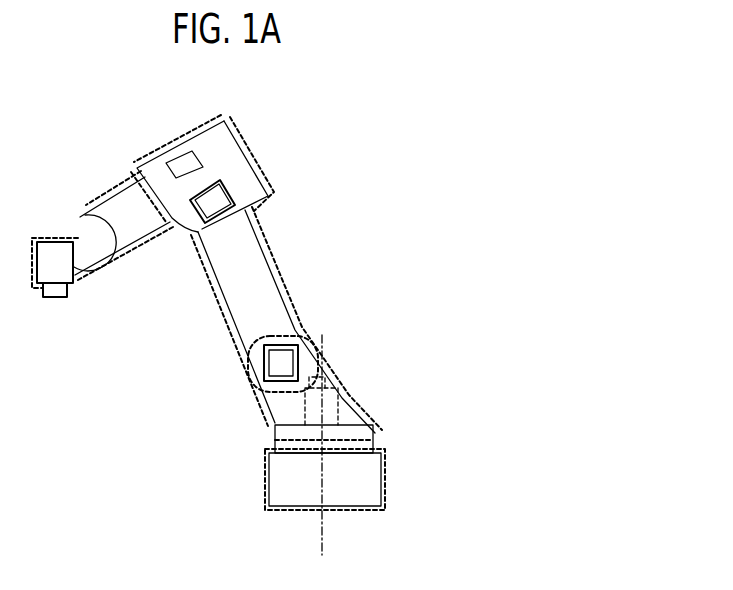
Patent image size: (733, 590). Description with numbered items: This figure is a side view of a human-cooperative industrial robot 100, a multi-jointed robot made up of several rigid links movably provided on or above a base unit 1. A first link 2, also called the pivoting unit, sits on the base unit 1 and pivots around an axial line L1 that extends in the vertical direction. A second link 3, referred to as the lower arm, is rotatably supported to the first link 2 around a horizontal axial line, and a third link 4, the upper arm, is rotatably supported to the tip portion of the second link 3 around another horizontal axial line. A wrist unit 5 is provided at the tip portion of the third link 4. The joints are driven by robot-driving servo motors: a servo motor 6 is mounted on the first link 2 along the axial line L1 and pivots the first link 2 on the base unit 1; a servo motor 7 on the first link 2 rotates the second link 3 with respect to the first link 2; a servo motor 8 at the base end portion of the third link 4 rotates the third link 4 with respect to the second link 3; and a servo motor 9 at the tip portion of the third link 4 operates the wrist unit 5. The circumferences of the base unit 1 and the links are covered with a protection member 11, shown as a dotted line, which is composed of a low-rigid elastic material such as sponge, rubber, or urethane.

The human-cooperative industrial robot 100 is at (346, 200).
The base unit 1 is at (299, 492).
The first link 2 is at (288, 404).
The second link 3 is at (266, 310).
The third link 4 is at (215, 138).
The wrist unit 5 is at (50, 298).
The servo motor 6 is at (347, 412).
The servo motor 7 is at (280, 367).
The servo motor 8 is at (232, 192).
The servo motor 9 is at (183, 162).
The protection member 11 is at (97, 200).
The axial line L1 is at (325, 461).